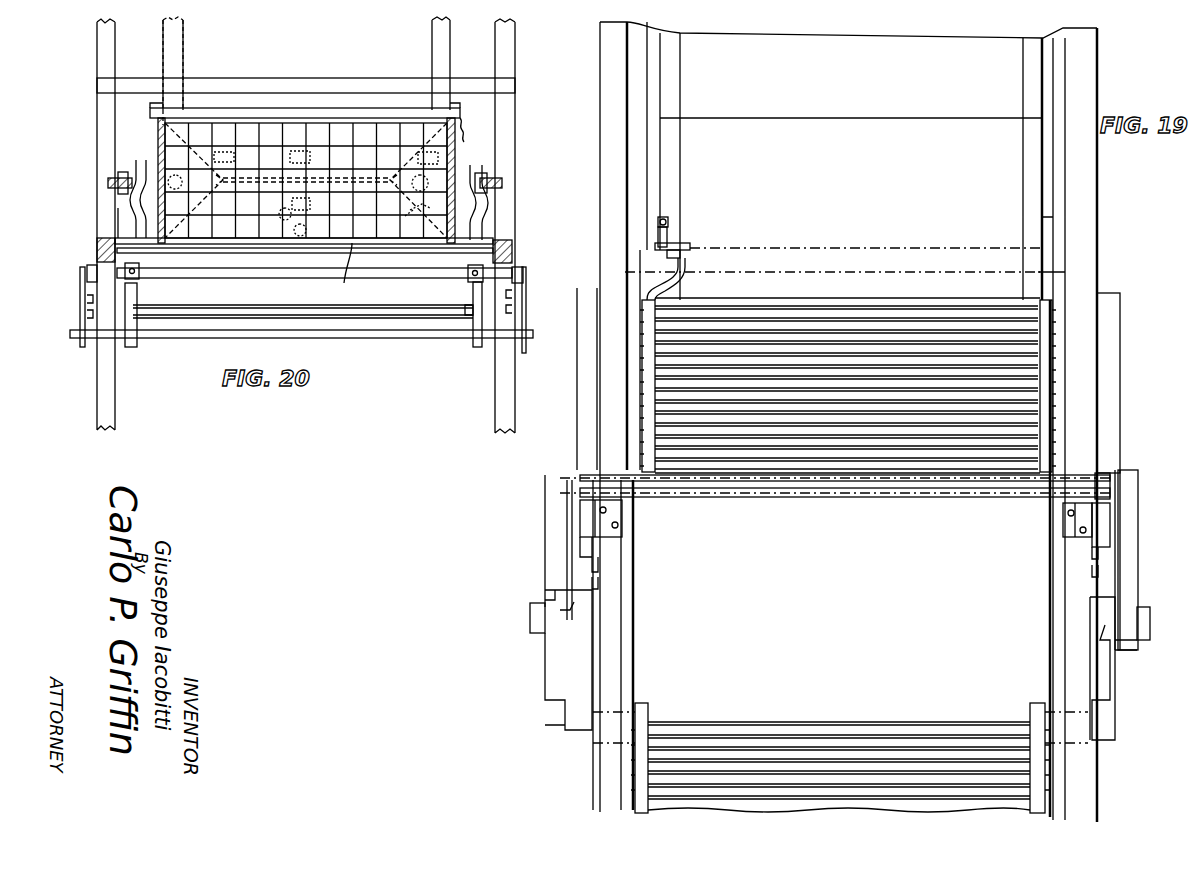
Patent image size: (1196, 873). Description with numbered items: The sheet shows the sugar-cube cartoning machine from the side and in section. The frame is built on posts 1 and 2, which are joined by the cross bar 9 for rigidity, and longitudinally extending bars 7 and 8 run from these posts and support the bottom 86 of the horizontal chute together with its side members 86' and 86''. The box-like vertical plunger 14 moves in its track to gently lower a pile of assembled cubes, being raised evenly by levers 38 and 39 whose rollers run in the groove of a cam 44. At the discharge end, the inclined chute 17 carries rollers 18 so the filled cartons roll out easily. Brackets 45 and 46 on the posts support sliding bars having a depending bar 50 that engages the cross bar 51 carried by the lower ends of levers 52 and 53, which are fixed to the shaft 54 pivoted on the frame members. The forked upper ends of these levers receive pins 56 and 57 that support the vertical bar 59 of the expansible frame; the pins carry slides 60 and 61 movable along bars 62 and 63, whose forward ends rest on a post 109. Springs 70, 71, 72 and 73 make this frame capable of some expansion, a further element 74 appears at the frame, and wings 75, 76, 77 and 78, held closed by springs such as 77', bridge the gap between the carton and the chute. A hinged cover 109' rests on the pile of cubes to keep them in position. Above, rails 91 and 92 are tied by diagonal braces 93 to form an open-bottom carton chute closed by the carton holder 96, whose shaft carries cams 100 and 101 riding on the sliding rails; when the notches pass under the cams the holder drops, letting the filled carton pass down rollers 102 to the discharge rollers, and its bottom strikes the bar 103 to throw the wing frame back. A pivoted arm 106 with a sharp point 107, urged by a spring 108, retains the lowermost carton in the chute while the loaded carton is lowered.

In FIG. 20, the post 1 is at (508, 130).
In FIG. 20, the post 2 is at (100, 121).
In FIG. 19, the post 2 is at (1087, 231).
In FIG. 20, the longitudinally extending bar 7 is at (100, 241).
In FIG. 20, the longitudinally extending bar 8 is at (512, 252).
In FIG. 20, the cross bar 9 is at (278, 82).
In FIG. 19, the cross bar 9 is at (1050, 263).
In FIG. 19, the vertical plunger 14 is at (856, 632).
In FIG. 19, the inclined chute 17 is at (648, 712).
In FIG. 19, the rollers 18 is at (870, 724).
In FIG. 19, the lever 38 is at (580, 660).
In FIG. 19, the lever 39 is at (1100, 674).
In FIG. 20, the cam 44 is at (533, 335).
In FIG. 19, the cam 44 is at (1105, 432).
In FIG. 20, the bracket 45 is at (522, 280).
In FIG. 19, the bracket 45 is at (580, 532).
In FIG. 20, the bracket 46 is at (87, 272).
In FIG. 19, the bracket 46 is at (1110, 552).
In FIG. 20, the depending bar 50 is at (80, 320).
In FIG. 20, the cross bar 51 is at (196, 339).
In FIG. 20, the lever 52 is at (470, 348).
In FIG. 20, the lever 53 is at (130, 347).
In FIG. 20, the shaft 54 is at (270, 272).
In FIG. 20, the pin 56 is at (490, 203).
In FIG. 20, the pin 57 is at (118, 210).
In FIG. 20, the vertical bar 59 is at (306, 180).
In FIG. 20, the slide 60 is at (487, 175).
In FIG. 20, the slide 61 is at (134, 178).
In FIG. 20, the bar 62 is at (502, 185).
In FIG. 20, the bar 63 is at (124, 185).
In FIG. 20, the spring 70 is at (468, 130).
In FIG. 20, the spring 71 is at (156, 134).
In FIG. 20, the spring 72 is at (429, 159).
In FIG. 20, the spring 73 is at (150, 212).
In FIG. 20, the grid element 74 is at (428, 209).
In FIG. 20, the wing 75 is at (414, 182).
In FIG. 20, the wing 76 is at (330, 139).
In FIG. 20, the wing 77 is at (189, 182).
In FIG. 20, the spring 77' is at (228, 158).
In FIG. 20, the wing 78 is at (308, 230).
In FIG. 20, the bottom 86 is at (340, 233).
In FIG. 20, the side member 86' is at (506, 162).
In FIG. 20, the side member 86'' is at (100, 177).
In FIG. 20, the rail 91 is at (436, 50).
In FIG. 19, the rail 91 is at (680, 102).
In FIG. 20, the rail 92 is at (187, 52).
In FIG. 19, the rail 92 is at (1023, 94).
In FIG. 19, the diagonal braces 93 is at (650, 178).
In FIG. 19, the carton holder 96 is at (1047, 376).
In FIG. 19, the cam 100 is at (580, 475).
In FIG. 19, the cam 101 is at (1100, 480).
In FIG. 19, the rollers 102 is at (835, 313).
In FIG. 20, the bar 103 is at (398, 313).
In FIG. 19, the arm 106 is at (680, 292).
In FIG. 19, the sharp point 107 is at (700, 256).
In FIG. 19, the spring 108 is at (670, 222).
In FIG. 20, the post 109 is at (315, 221).
In FIG. 20, the hinged cover 109' is at (305, 106).